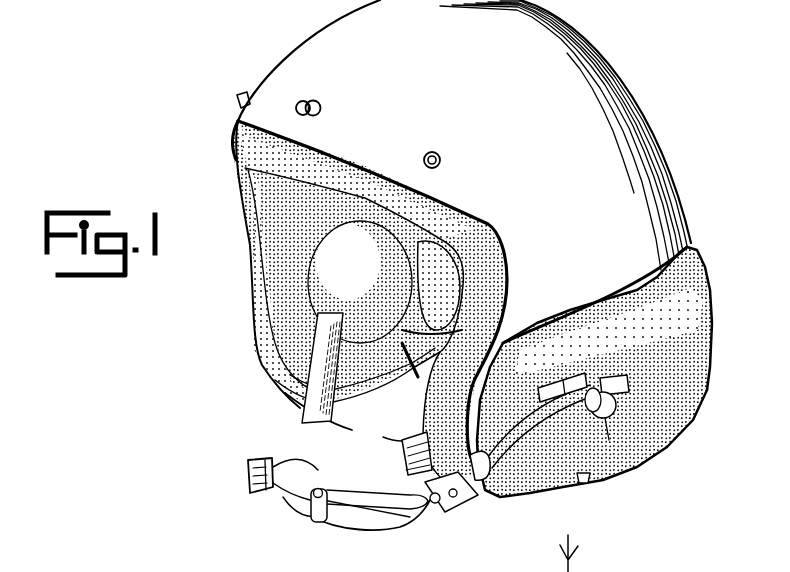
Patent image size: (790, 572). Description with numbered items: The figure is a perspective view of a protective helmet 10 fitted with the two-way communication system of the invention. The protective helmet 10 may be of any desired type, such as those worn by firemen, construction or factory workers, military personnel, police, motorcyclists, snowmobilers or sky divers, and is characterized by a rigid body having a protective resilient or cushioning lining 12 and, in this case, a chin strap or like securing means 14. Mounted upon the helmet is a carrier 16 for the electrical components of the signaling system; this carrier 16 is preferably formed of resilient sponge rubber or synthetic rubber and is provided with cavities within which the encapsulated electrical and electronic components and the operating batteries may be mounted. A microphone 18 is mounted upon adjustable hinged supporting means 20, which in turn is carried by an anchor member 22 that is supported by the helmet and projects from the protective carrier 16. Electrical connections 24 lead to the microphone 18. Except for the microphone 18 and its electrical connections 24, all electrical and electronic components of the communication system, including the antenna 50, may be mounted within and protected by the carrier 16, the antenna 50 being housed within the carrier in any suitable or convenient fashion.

The protective helmet 10 is at (601, 132).
The protective resilient or cushioning lining 12 is at (295, 290).
The chin strap or like securing means 14 is at (402, 442).
The carrier 16 is at (710, 287).
The microphone 18 is at (300, 467).
The adjustable hinged supporting means 20 is at (438, 500).
The anchor member 22 is at (624, 455).
The electrical connections 24 is at (394, 528).
The antenna 50 is at (575, 556).